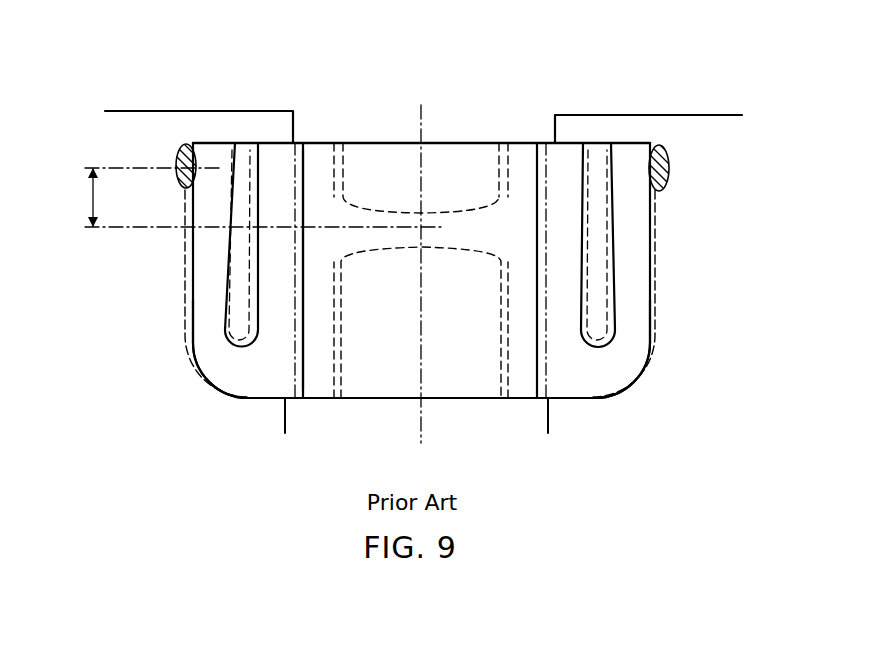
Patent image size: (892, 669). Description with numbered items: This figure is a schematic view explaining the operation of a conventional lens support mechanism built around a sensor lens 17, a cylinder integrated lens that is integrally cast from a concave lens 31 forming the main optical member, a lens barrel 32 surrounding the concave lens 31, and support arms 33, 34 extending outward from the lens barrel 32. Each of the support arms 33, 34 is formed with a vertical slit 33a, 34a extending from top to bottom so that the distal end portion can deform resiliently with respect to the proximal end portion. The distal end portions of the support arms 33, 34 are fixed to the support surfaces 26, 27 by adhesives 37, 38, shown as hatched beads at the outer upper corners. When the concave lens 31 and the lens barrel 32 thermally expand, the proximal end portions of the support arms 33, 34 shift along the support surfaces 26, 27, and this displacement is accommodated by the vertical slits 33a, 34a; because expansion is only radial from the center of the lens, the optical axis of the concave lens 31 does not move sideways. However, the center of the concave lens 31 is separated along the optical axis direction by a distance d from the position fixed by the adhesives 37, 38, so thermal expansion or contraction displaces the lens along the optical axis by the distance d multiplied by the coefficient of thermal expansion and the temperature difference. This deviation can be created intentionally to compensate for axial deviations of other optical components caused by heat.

The sensor lens 17 is at (465, 140).
The support surface 26 is at (175, 118).
The support surface 27 is at (641, 122).
The concave lens 31 is at (381, 206).
The lens barrel 32 is at (323, 152).
The support arm 33 is at (213, 355).
The vertical slit 33a is at (240, 303).
The support arm 34 is at (618, 363).
The vertical slit 34a is at (600, 307).
The adhesive 37 is at (177, 150).
The adhesive 38 is at (669, 163).
The distance d is at (90, 198).